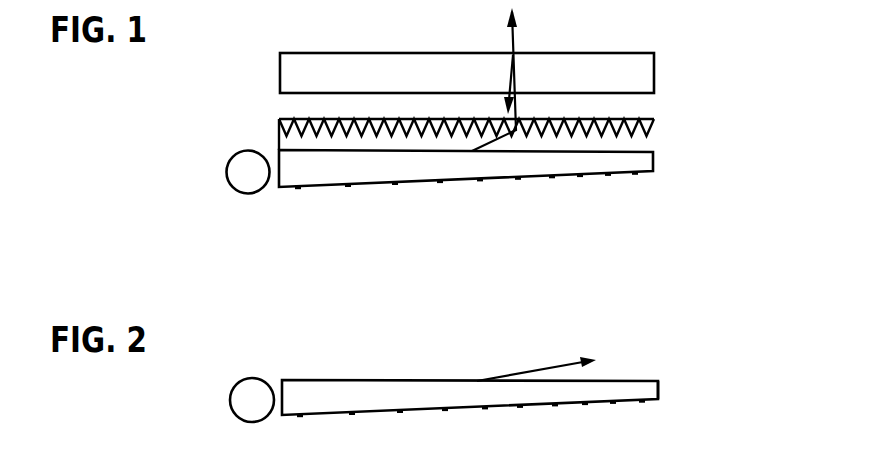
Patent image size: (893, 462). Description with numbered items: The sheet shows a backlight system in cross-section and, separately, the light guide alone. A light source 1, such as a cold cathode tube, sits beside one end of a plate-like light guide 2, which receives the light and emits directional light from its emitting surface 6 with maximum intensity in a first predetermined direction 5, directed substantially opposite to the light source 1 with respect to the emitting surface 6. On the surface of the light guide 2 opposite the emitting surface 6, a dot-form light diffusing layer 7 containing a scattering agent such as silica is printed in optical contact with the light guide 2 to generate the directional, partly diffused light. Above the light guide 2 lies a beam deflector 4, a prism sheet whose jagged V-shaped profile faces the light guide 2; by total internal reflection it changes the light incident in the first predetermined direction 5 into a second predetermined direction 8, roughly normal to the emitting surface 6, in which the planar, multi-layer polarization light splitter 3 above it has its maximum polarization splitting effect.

In FIG. 1, the light source 1 is at (233, 175).
In FIG. 2, the light source 1 is at (242, 404).
In FIG. 1, the light guide 2 is at (657, 165).
In FIG. 2, the light guide 2 is at (323, 390).
In FIG. 1, the polarization light splitter 3 is at (657, 73).
In FIG. 1, the beam deflector 4 is at (650, 136).
In FIG. 1, the first predetermined direction 5 is at (520, 138).
In FIG. 2, the first predetermined direction 5 is at (523, 370).
In FIG. 1, the emitting surface 6 is at (287, 147).
In FIG. 2, the emitting surface 6 is at (642, 382).
In FIG. 1, the light diffusing layer 7 is at (582, 177).
In FIG. 2, the light diffusing layer 7 is at (587, 405).
In FIG. 1, the second predetermined direction 8 is at (520, 105).